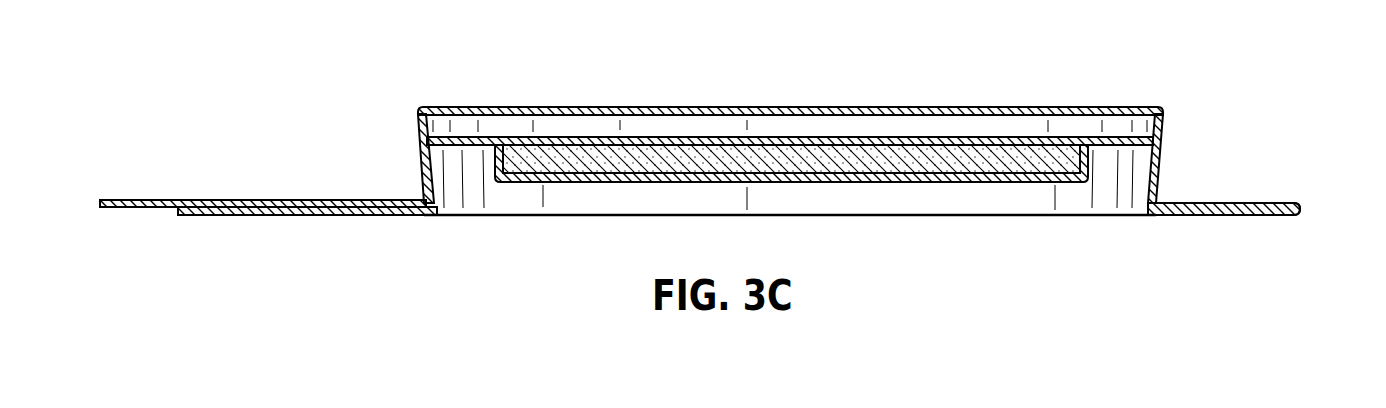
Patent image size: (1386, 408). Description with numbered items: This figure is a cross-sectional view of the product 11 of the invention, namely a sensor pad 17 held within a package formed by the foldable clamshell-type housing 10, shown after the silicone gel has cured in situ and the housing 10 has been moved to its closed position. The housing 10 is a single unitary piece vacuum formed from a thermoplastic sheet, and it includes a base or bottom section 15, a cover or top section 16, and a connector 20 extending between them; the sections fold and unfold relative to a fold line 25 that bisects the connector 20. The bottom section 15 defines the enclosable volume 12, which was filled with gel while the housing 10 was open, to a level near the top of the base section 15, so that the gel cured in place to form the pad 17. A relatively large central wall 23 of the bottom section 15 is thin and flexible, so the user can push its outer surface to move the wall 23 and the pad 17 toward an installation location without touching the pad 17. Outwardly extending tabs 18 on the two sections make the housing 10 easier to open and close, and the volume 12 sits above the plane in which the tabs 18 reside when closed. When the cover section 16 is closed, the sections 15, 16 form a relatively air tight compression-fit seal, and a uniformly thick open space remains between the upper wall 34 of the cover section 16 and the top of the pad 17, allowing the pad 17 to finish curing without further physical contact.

The foldable clamshell-type housing 10 is at (574, 103).
The product 11 is at (333, 76).
The enclosable volume 12 is at (820, 155).
The base or bottom section 15 is at (461, 113).
The cover or top section 16 is at (1103, 107).
The sensor pad 17 is at (726, 145).
The tabs 18 is at (161, 200).
The connector 20 is at (1239, 203).
The central wall 23 is at (630, 182).
The fold line 25 is at (1302, 208).
The upper wall 34 is at (953, 107).